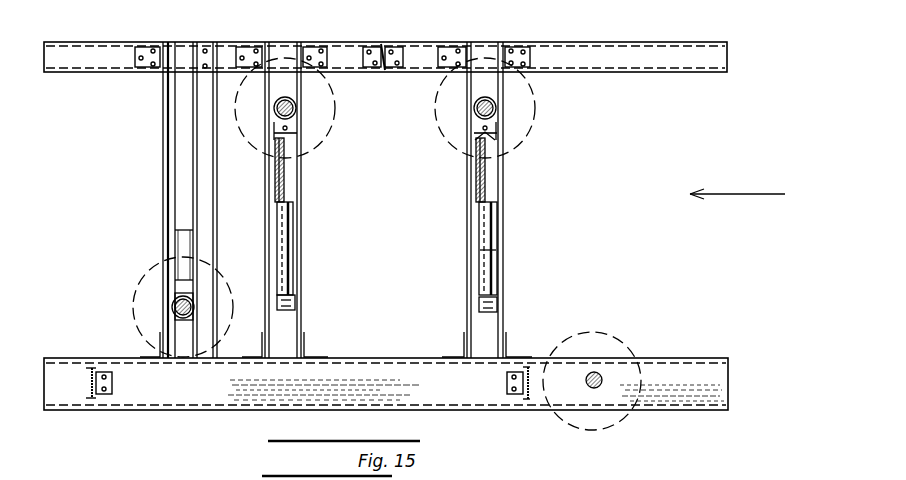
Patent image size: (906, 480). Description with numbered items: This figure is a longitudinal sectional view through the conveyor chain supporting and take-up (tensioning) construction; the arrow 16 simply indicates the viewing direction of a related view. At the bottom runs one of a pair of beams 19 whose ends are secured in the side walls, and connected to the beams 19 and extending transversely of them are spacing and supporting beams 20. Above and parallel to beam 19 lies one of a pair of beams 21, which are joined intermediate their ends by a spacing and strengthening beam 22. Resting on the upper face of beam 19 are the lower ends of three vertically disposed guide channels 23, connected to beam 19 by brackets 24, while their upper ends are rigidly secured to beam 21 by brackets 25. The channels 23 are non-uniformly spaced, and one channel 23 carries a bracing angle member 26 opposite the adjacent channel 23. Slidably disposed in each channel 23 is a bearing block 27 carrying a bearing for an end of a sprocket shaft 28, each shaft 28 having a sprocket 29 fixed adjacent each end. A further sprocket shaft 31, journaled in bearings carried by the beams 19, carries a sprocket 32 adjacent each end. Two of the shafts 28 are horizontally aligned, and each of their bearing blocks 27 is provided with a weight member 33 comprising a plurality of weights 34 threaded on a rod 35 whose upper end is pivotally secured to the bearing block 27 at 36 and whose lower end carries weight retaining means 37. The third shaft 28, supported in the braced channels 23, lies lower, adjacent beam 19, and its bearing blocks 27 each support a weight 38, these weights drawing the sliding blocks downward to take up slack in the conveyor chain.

The direction arrow 16 is at (728, 205).
The beam 19 is at (272, 378).
The spacing and supporting beam 20 is at (90, 400).
The beam 21 is at (658, 50).
The spacing and strengthening beam 22 is at (390, 72).
The guide channel 23 is at (175, 188).
The bracket 24 is at (137, 342).
The bracket 25 is at (330, 62).
The bracing angle member 26 is at (204, 216).
The bearing block 27 is at (302, 109).
The sprocket shaft 28 is at (292, 112).
The sprocket 29 is at (523, 120).
The sprocket shaft 31 is at (598, 380).
The sprocket 32 is at (590, 336).
The weight member 33 is at (296, 266).
The weight 34 is at (486, 274).
The rod 35 is at (298, 200).
The pivotal securing point 36 is at (480, 132).
The weight retaining means 37 is at (296, 302).
The weight 38 is at (182, 238).